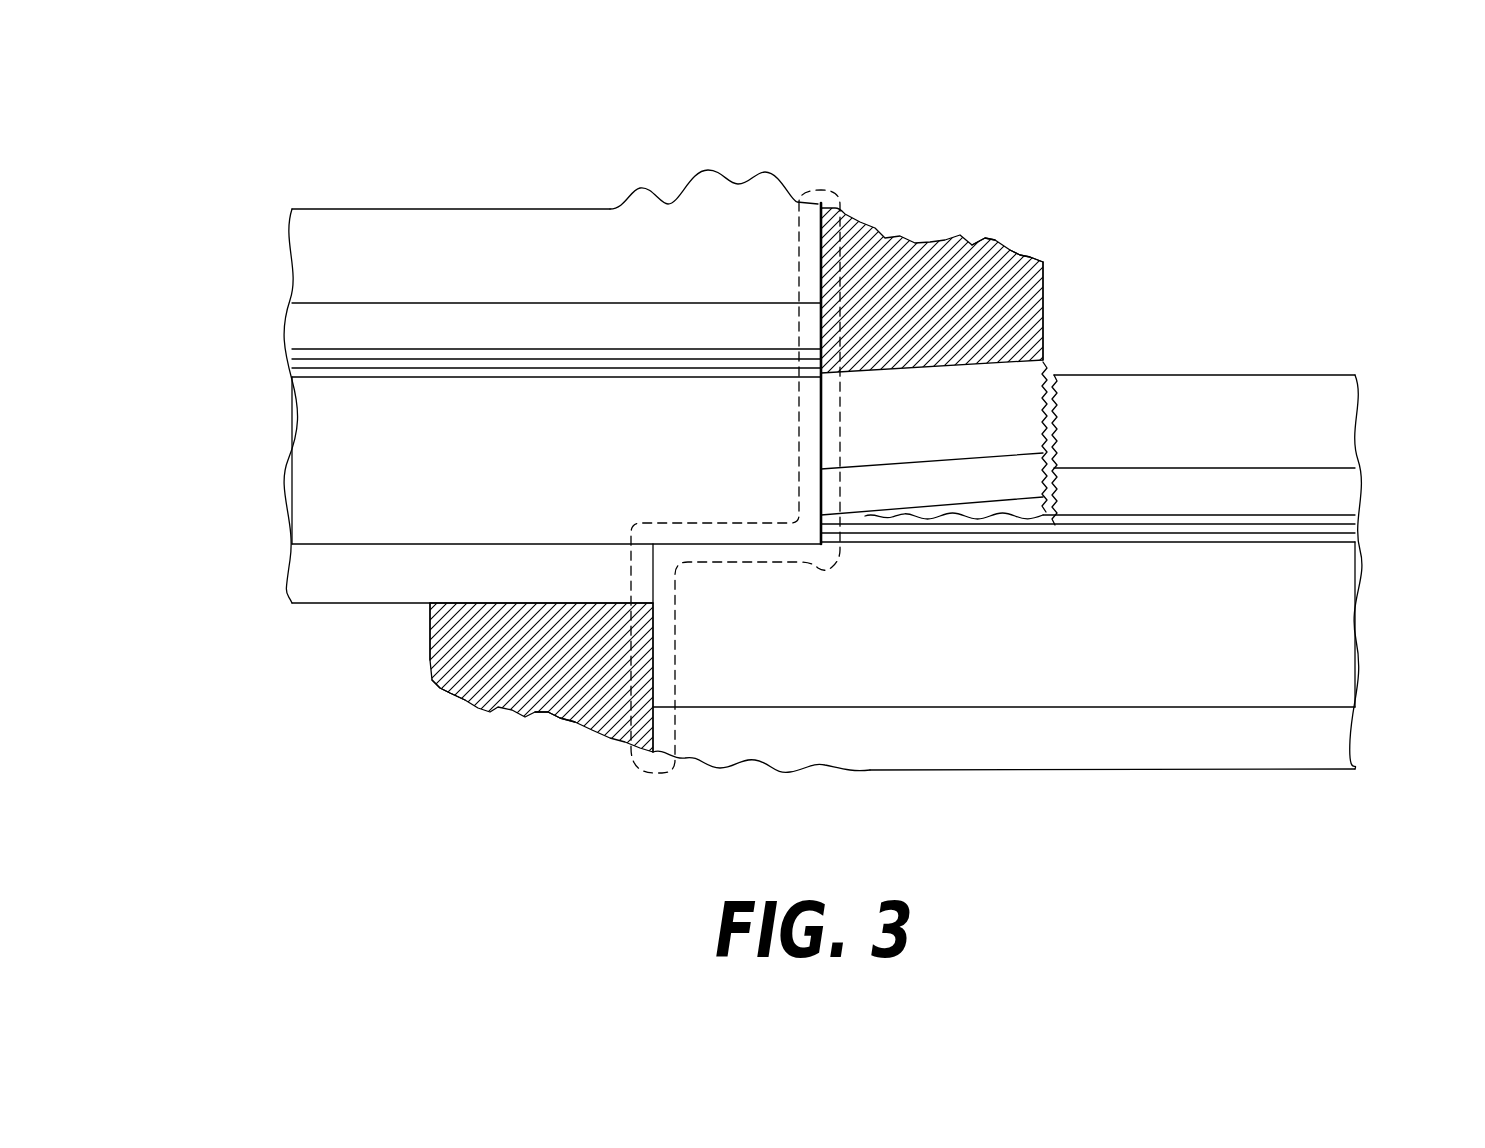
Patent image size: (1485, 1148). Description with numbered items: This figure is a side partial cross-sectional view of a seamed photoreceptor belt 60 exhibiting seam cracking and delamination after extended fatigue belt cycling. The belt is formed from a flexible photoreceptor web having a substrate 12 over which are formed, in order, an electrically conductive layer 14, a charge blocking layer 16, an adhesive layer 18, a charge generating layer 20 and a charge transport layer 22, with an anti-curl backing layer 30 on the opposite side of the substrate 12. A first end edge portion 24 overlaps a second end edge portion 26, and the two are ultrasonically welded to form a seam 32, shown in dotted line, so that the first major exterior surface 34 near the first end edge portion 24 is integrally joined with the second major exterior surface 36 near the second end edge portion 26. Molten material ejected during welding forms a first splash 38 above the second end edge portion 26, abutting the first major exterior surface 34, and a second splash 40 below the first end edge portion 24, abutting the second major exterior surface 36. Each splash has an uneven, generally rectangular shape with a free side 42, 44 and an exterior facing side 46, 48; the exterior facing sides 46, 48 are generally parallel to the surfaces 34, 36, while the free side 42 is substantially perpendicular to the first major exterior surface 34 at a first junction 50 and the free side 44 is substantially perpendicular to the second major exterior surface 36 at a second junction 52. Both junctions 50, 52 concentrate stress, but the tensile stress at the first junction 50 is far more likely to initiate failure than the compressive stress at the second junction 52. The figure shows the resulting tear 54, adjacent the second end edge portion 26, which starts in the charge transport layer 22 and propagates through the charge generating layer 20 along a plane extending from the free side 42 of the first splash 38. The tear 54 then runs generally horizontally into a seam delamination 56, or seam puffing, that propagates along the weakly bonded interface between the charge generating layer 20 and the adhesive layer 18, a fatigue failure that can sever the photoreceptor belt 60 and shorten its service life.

The substrate 12 is at (300, 458).
The electrically conductive layer 14 is at (292, 371).
The charge blocking layer 16 is at (292, 365).
The adhesive layer 18 is at (292, 353).
The charge generating layer 20 is at (300, 312).
The charge transport layer 22 is at (300, 246).
The first end edge portion 24 is at (722, 140).
The second end edge portion 26 is at (722, 785).
The anti-curl backing layer 30 is at (300, 562).
The seam 32 is at (640, 773).
The first major exterior surface 34 is at (430, 209).
The second major exterior surface 36 is at (322, 605).
The first splash 38 is at (1035, 237).
The second splash 40 is at (490, 735).
The free side 42 is at (1030, 258).
The free side 44 is at (433, 683).
The exterior facing side 46 is at (990, 237).
The exterior facing side 48 is at (545, 713).
The first junction 50 is at (1048, 355).
The second junction 52 is at (427, 610).
The tear 54 is at (1060, 362).
The seam delamination 56 is at (1035, 520).
The photoreceptor belt 60 is at (1282, 225).